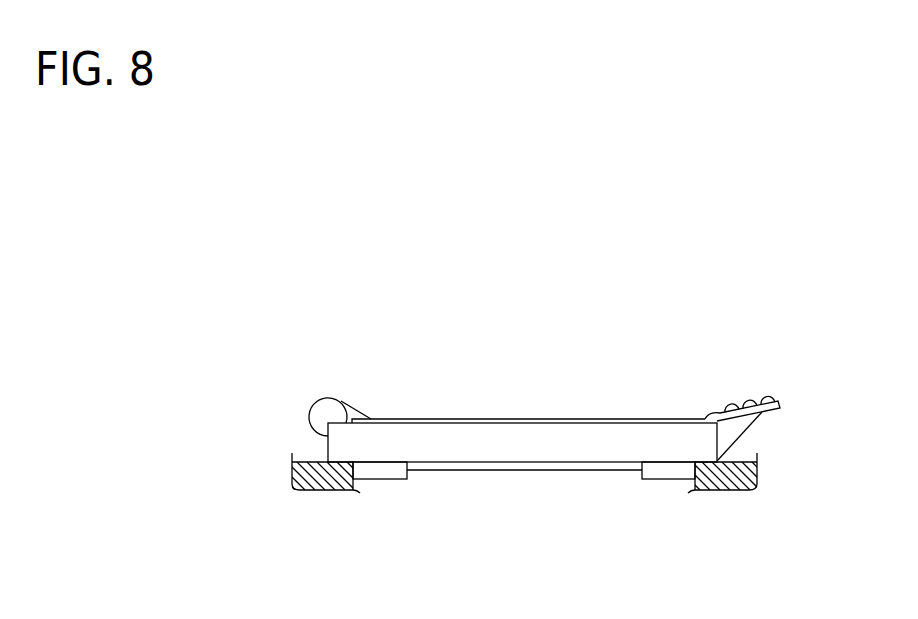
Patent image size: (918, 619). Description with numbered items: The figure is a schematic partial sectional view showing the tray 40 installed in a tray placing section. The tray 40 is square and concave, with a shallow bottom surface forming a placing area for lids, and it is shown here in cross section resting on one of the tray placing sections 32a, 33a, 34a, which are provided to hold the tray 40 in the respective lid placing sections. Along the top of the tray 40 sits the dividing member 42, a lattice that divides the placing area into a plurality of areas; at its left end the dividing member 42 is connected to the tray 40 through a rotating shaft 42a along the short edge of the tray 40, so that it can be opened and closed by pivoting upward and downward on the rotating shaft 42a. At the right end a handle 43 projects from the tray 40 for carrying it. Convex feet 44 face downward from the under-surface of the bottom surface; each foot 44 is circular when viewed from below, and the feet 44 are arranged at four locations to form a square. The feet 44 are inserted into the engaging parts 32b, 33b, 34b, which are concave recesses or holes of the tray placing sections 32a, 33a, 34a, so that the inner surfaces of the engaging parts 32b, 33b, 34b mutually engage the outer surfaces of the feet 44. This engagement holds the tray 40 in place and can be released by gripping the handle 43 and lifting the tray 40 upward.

The tray 40 is at (668, 388).
The dividing member 42 is at (428, 418).
The rotating shaft 42a is at (328, 407).
The handle 43 is at (772, 411).
The convex feet 44 is at (408, 476).
The tray placing section 32a is at (535, 527).
The tray placing section 33a is at (535, 527).
The tray placing section 34a is at (664, 494).
The engaging part 32b is at (545, 519).
The engaging part 33b is at (545, 519).
The engaging part 34b is at (695, 489).